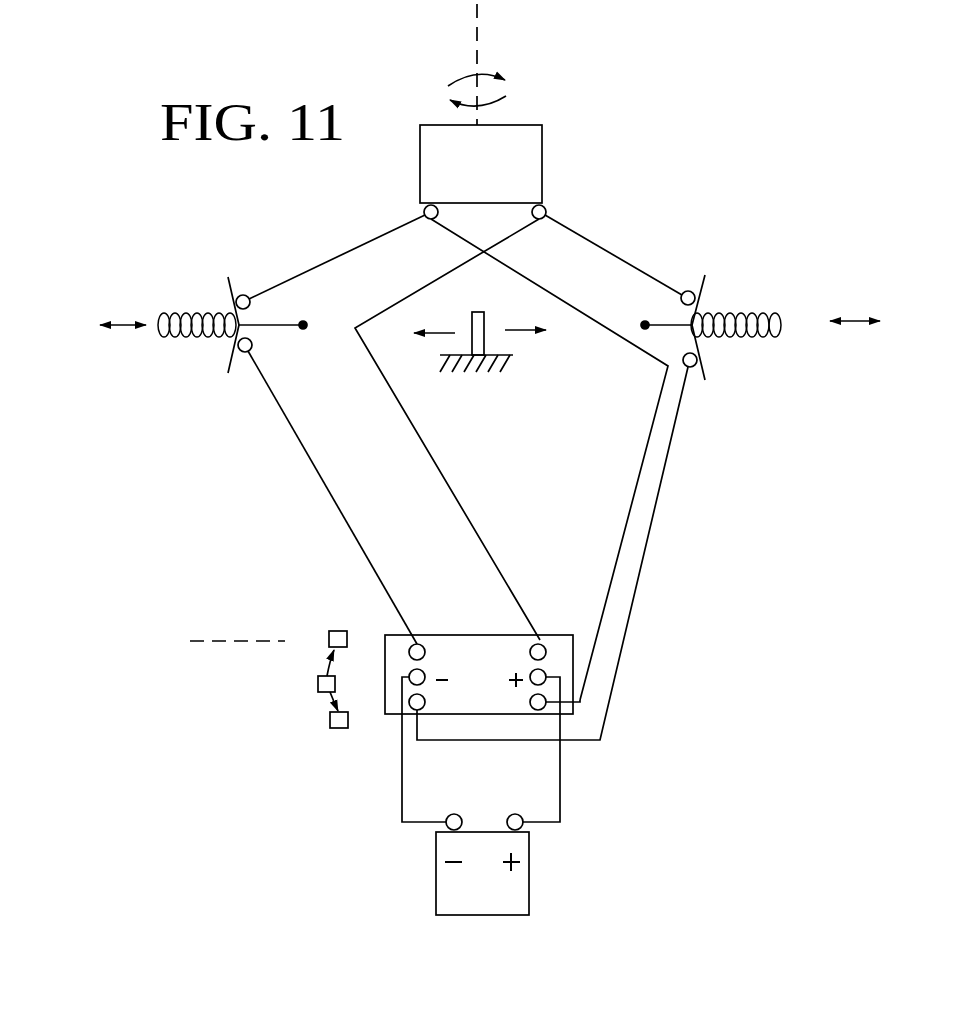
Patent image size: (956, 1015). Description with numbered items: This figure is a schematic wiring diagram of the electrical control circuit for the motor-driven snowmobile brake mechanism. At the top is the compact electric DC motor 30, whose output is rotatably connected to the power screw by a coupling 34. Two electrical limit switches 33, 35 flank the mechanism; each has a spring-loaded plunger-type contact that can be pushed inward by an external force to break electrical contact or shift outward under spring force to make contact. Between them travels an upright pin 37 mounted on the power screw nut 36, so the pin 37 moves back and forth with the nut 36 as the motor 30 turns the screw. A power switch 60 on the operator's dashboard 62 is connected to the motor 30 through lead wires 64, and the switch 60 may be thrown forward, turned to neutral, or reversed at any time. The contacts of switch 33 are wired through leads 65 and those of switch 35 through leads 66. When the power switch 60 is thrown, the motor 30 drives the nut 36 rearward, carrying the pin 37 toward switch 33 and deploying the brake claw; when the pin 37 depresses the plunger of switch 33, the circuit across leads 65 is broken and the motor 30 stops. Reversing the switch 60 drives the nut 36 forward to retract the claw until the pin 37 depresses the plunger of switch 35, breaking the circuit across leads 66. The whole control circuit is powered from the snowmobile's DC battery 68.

The electric DC motor 30 is at (548, 160).
The limit switch 33 is at (228, 263).
The coupling 34 is at (481, 40).
The limit switch 35 is at (712, 263).
The power screw nut 36 is at (487, 380).
The upright pin 37 is at (485, 330).
The power switch 60 is at (316, 684).
The dashboard 62 is at (507, 718).
The lead wires 64 is at (416, 288).
The lead wires 65 is at (345, 252).
The lead wires 66 is at (609, 250).
The DC battery 68 is at (496, 916).